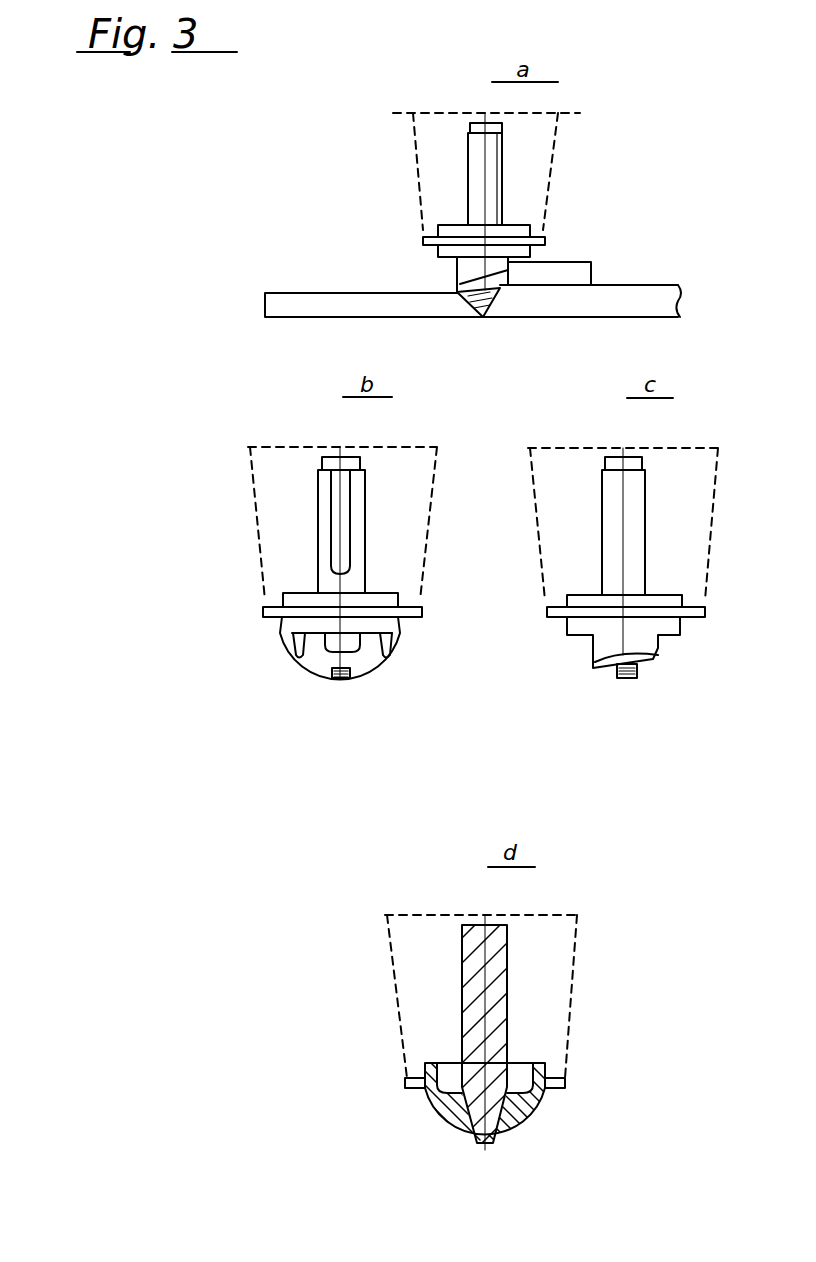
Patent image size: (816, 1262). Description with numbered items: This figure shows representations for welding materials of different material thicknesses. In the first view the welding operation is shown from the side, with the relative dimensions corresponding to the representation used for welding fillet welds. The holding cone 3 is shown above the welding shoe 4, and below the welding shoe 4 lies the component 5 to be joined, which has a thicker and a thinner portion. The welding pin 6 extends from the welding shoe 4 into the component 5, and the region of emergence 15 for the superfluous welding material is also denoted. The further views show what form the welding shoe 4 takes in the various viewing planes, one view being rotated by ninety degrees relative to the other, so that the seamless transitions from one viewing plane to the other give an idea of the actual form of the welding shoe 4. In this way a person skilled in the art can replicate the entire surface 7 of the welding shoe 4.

The holding cone 3 is at (550, 188).
The welding shoe 4 is at (495, 262).
The component 5 is at (370, 293).
The welding pin 6 is at (350, 673).
The surface 7 is at (653, 660).
The region of emergence 15 is at (325, 648).